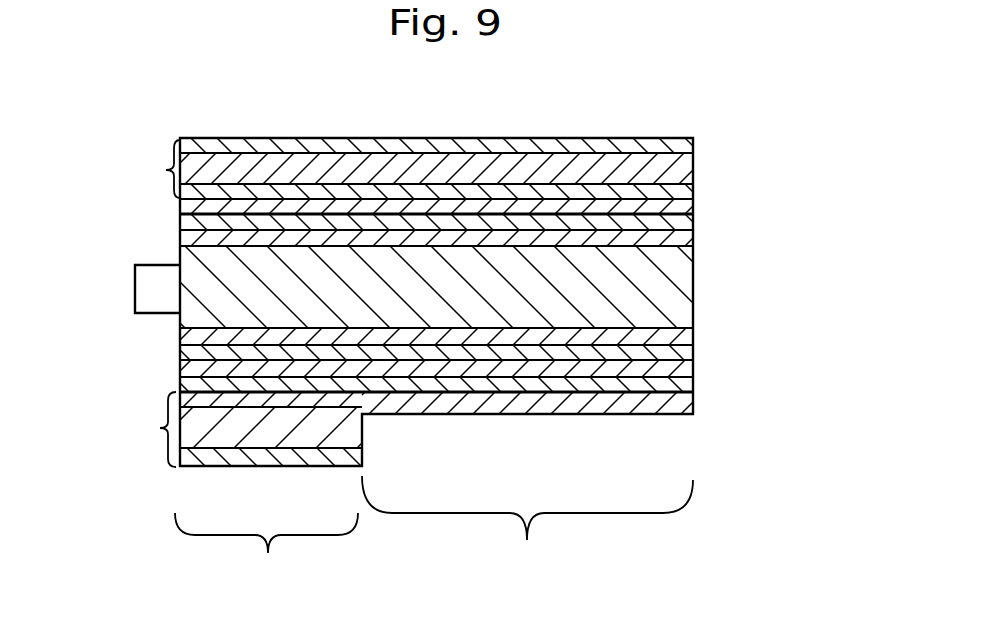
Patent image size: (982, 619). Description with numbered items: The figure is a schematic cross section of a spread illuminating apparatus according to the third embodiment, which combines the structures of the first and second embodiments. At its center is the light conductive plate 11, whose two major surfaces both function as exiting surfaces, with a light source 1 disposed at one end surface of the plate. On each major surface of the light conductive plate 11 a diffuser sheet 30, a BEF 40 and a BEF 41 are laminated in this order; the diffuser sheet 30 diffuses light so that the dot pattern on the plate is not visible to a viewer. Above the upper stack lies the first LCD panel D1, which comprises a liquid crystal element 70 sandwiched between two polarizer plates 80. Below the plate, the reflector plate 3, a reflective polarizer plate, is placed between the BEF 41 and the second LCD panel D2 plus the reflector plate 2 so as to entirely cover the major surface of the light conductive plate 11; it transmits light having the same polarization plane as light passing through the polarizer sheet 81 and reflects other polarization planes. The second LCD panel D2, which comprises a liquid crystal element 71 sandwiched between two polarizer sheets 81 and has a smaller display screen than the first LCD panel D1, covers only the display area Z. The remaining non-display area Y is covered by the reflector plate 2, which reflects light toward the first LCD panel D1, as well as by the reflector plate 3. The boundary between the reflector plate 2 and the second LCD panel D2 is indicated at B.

The light source 1 is at (150, 292).
The reflector plate 2 is at (683, 405).
The reflector plate 3 is at (682, 385).
The light conductive plate 11 is at (652, 288).
The diffuser sheet 30 is at (680, 242).
The BEF 40 is at (680, 223).
The BEF 41 is at (677, 208).
The liquid crystal element 70 is at (667, 174).
The liquid crystal element 71 is at (232, 432).
The polarizer plate 80 is at (645, 146).
The polarizer sheet 81 is at (178, 390).
The boundary B is at (376, 419).
The first LCD panel D1 is at (160, 170).
The second LCD panel D2 is at (145, 429).
The non-display area Y is at (527, 530).
The display area Z is at (266, 553).